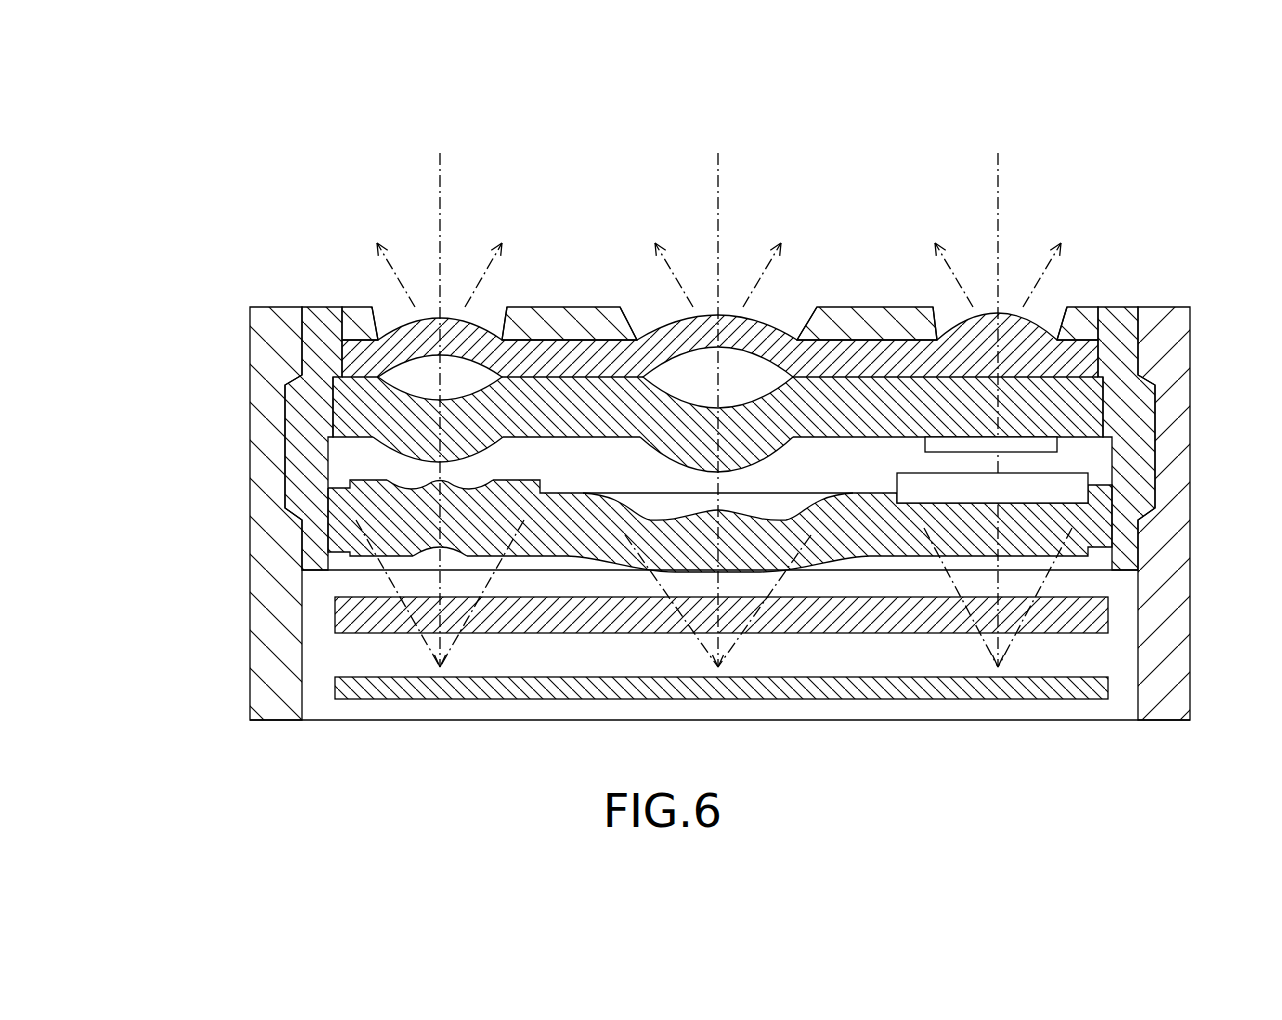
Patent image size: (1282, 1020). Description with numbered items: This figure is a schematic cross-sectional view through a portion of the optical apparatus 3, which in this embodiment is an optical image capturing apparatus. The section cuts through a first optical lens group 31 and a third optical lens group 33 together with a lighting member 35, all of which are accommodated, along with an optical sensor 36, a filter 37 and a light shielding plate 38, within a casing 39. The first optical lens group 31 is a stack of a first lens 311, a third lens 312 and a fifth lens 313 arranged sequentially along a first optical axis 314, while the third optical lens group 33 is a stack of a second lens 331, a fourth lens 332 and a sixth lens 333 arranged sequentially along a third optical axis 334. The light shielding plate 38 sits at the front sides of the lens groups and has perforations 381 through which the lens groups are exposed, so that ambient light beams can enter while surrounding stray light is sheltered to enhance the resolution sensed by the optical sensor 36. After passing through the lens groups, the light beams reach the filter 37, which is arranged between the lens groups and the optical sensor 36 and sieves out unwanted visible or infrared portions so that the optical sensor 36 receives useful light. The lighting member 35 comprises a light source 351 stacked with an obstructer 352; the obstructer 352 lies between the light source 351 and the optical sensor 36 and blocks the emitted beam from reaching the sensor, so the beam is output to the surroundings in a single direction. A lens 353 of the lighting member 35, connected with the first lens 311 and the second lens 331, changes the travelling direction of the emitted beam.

The optical apparatus 3 is at (1150, 228).
The first optical lens group 31 is at (103, 55).
The first lens 311 is at (515, 292).
The third lens 312 is at (422, 453).
The fifth lens 313 is at (232, 735).
The first optical axis 314 is at (473, 180).
The third optical lens group 33 is at (240, 55).
The second lens 331 is at (801, 292).
The fourth lens 332 is at (395, 745).
The sixth lens 333 is at (985, 745).
The third optical axis 334 is at (753, 180).
The lighting member 35 is at (377, 80).
The light source 351 is at (1230, 453).
The obstructer 352 is at (1242, 712).
The lens 353 is at (1023, 313).
The optical sensor 36 is at (1043, 687).
The filter 37 is at (640, 620).
The light shielding plate 38 is at (1122, 309).
The perforations 381 is at (390, 316).
The casing 39 is at (1178, 523).